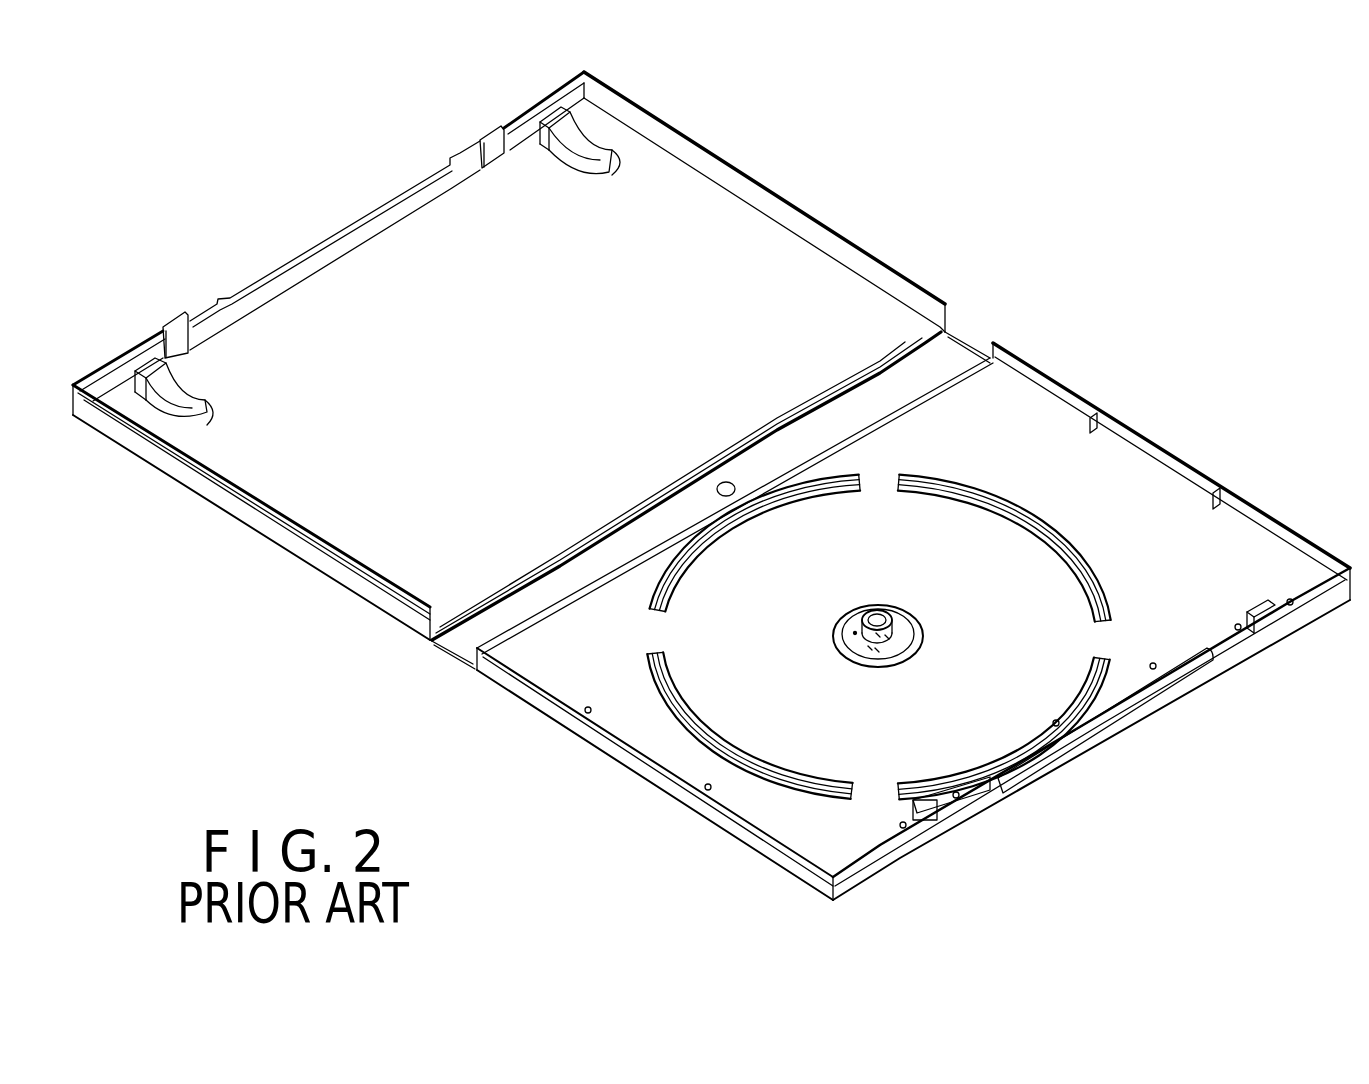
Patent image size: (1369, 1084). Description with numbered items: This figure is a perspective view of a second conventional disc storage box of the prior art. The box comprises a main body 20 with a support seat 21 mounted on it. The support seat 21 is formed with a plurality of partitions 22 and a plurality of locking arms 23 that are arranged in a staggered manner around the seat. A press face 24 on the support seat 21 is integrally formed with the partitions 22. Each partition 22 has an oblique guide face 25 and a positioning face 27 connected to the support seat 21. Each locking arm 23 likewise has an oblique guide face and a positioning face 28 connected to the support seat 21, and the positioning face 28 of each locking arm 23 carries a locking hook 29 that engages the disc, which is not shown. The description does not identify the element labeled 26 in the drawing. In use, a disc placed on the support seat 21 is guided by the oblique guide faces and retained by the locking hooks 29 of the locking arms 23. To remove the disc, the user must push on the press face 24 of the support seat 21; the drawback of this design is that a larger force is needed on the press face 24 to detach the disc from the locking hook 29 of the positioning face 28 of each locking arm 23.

The main body 20 is at (1127, 477).
The support seat 21 is at (903, 630).
The partitions 22 is at (877, 650).
The locking arms 23 is at (863, 604).
The press face 24 is at (874, 612).
The oblique guide face 25 is at (855, 633).
The central hole 26 is at (887, 617).
The positioning face 27 is at (870, 648).
The positioning face 28 is at (878, 636).
The locking hook 29 is at (887, 637).